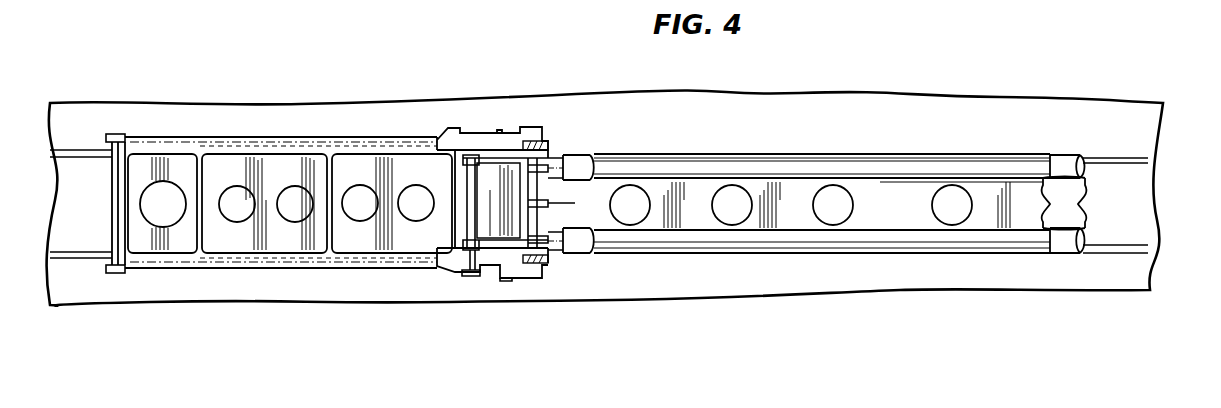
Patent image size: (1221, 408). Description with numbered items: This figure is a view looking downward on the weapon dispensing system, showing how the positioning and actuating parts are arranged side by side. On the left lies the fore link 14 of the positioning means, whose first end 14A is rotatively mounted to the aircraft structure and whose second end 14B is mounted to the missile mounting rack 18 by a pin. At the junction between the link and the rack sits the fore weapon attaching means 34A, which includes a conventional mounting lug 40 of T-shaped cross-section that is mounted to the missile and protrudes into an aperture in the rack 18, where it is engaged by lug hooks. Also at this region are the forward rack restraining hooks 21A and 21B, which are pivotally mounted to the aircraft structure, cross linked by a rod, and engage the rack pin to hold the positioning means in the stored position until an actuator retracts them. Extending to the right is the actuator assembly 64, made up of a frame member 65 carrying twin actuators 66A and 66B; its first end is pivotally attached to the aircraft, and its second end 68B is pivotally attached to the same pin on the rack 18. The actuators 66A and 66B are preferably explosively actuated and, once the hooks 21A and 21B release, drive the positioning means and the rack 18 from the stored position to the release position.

The fore link 14 is at (317, 267).
The first end of fore link 14A is at (162, 268).
The second end of fore link 14B is at (428, 267).
The missile mounting rack 18 is at (1100, 157).
The forward rack restraining hook 21A is at (553, 260).
The forward rack restraining hook 21B is at (548, 148).
The fore weapon attaching means 34A is at (503, 280).
The mounting lug 40 is at (480, 187).
The actuator assembly 64 is at (902, 220).
The frame member 65 is at (920, 187).
The actuator 66A is at (730, 240).
The actuator 66B is at (727, 167).
The second end of actuator assembly 68B is at (593, 252).